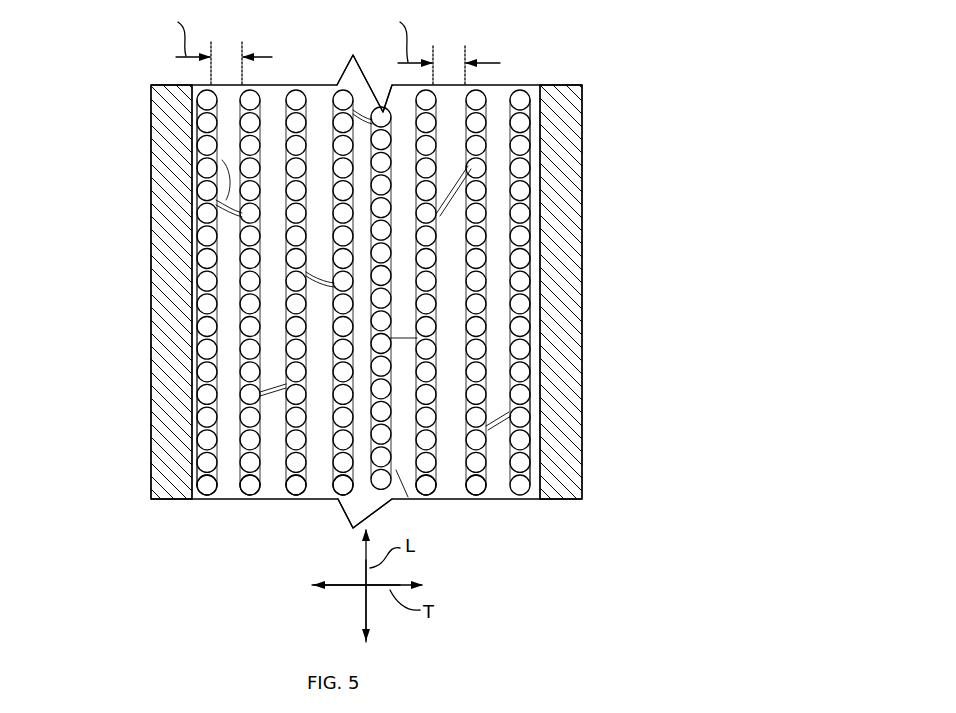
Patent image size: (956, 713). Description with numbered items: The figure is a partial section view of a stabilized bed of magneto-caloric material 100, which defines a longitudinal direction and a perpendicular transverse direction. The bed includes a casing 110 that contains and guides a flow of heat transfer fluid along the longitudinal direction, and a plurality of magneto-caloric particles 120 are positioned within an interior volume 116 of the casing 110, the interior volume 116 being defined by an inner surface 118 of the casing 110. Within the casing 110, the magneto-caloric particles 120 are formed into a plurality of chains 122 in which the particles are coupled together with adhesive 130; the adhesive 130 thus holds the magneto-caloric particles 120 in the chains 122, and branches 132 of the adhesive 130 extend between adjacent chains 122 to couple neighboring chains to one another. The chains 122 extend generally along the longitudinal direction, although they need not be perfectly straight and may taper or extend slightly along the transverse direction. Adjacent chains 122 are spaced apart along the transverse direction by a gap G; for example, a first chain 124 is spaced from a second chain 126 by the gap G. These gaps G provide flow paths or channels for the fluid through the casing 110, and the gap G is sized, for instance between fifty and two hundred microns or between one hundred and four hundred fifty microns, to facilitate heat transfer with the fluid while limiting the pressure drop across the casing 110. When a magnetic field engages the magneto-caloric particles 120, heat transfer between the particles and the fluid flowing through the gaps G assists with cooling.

The stabilized bed of magneto-caloric material 100 is at (137, 64).
The casing 110 is at (560, 195).
The interior volume 116 is at (318, 108).
The inner surface 118 is at (524, 484).
The magneto-caloric particles 120 is at (210, 237).
The chains 122 is at (342, 502).
The first chain 124 is at (207, 502).
The second chain 126 is at (242, 502).
The adhesive 130 is at (521, 88).
The branches 132 is at (225, 200).
The gap G is at (332, 44).